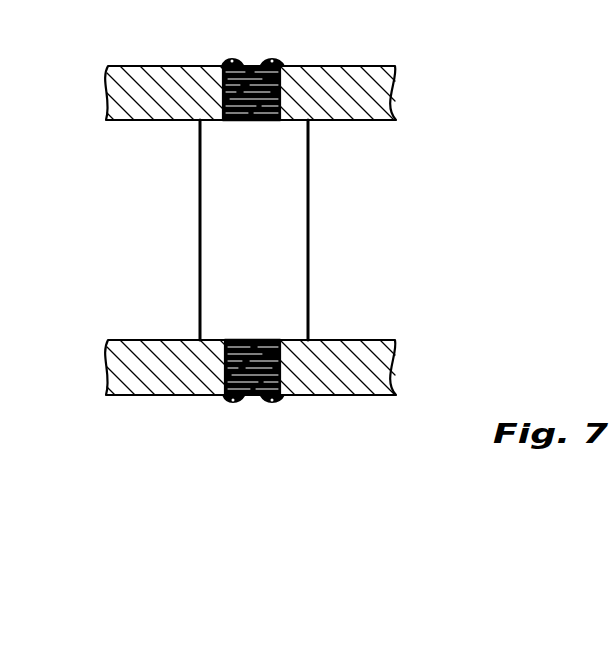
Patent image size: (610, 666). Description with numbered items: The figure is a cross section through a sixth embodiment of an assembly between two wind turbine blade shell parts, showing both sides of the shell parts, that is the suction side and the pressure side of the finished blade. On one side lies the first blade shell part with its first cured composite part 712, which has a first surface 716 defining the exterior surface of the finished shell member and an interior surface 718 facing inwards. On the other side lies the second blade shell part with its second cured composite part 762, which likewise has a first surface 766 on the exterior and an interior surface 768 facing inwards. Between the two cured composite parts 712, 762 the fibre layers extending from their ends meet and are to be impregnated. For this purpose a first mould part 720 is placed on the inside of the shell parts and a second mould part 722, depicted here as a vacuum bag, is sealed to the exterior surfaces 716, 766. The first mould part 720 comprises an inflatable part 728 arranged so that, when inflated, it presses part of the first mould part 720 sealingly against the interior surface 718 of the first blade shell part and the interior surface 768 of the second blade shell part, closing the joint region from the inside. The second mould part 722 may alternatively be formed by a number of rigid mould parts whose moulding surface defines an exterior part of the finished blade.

The first cured composite part 712 is at (197, 120).
The first surface of the first blade shell part 716 is at (149, 66).
The interior surface of the first blade shell part 718 is at (150, 340).
The first mould part 720 is at (287, 122).
The second mould part 722 is at (222, 63).
The inflatable part 728 is at (290, 227).
The second cured composite part 762 is at (380, 122).
The first surface of the second blade shell part 766 is at (352, 66).
The interior surface of the second blade shell part 768 is at (390, 340).